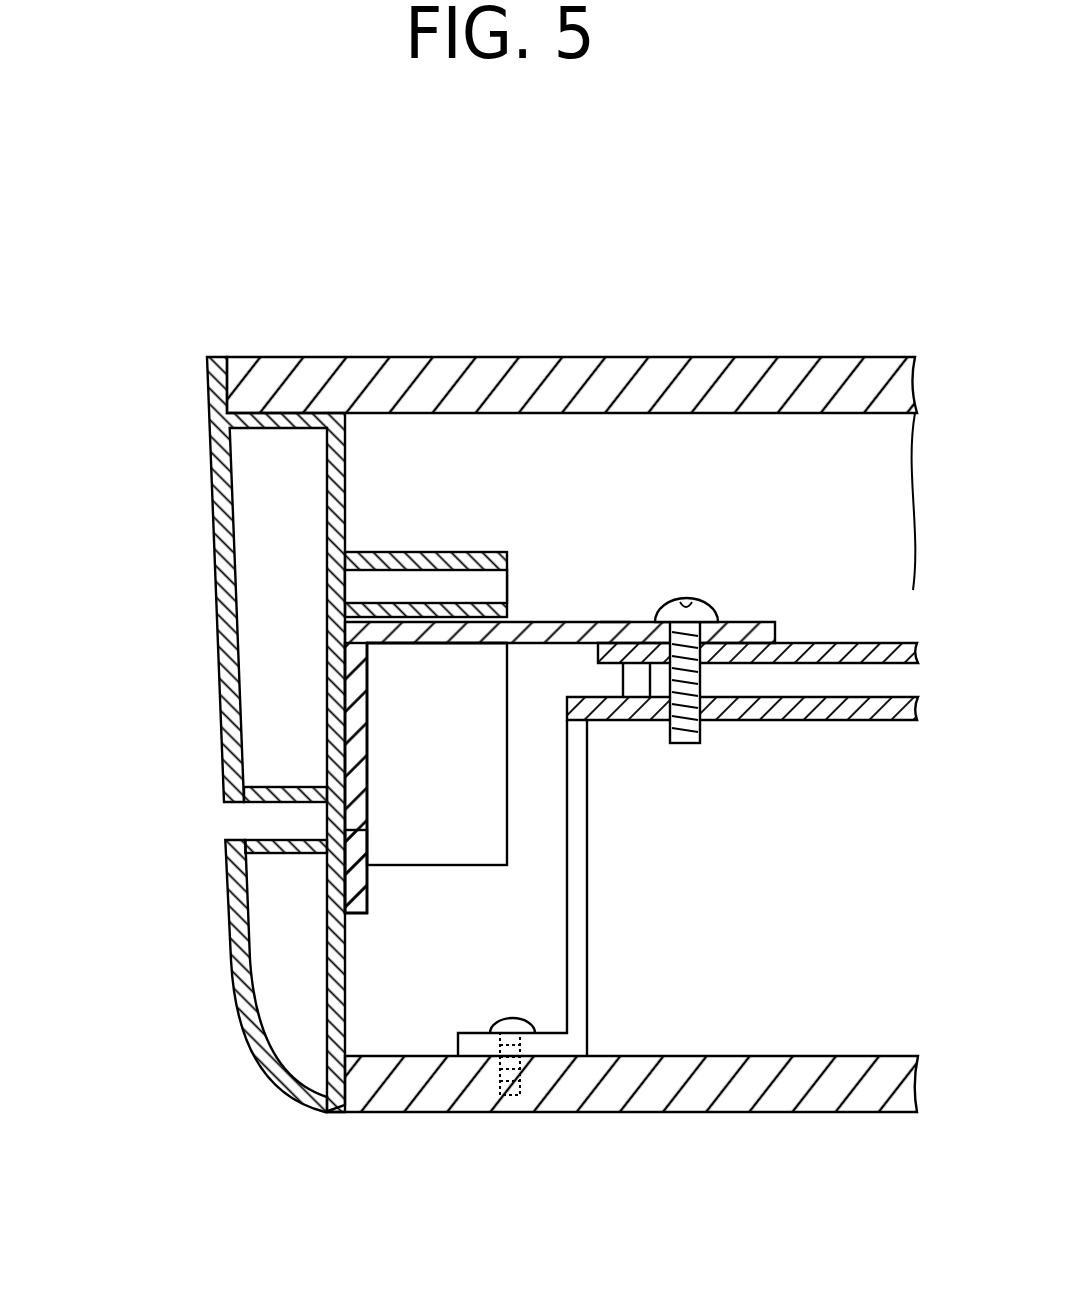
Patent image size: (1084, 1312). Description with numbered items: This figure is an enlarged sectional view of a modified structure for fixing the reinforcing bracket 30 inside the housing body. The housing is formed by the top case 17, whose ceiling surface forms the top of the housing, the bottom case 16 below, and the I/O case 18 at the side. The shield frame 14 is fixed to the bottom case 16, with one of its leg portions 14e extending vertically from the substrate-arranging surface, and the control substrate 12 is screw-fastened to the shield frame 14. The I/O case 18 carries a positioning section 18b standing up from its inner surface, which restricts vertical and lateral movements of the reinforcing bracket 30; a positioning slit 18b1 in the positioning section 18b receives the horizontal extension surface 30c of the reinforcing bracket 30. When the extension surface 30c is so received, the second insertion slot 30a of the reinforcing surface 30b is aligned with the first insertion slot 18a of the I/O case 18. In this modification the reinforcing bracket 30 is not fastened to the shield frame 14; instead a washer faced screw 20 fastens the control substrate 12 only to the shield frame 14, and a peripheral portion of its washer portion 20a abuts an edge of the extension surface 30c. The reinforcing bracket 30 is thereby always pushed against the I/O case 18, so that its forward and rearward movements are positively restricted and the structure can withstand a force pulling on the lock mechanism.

The control substrate 12 is at (842, 643).
The shield frame 14 is at (838, 720).
The leg portion 14e is at (587, 922).
The bottom case 16 is at (640, 1112).
The top case 17 is at (648, 357).
The I/O case 18 is at (208, 492).
The first insertion slot 18a is at (225, 818).
The positioning section 18b is at (413, 867).
The positioning slit 18b1 is at (460, 627).
The screw 20 is at (700, 598).
The washer portion 20a is at (613, 622).
The reinforcing bracket 30 is at (540, 622).
The second insertion slot 30a is at (357, 833).
The reinforcing surface 30b is at (355, 705).
The extension surface 30c is at (427, 640).